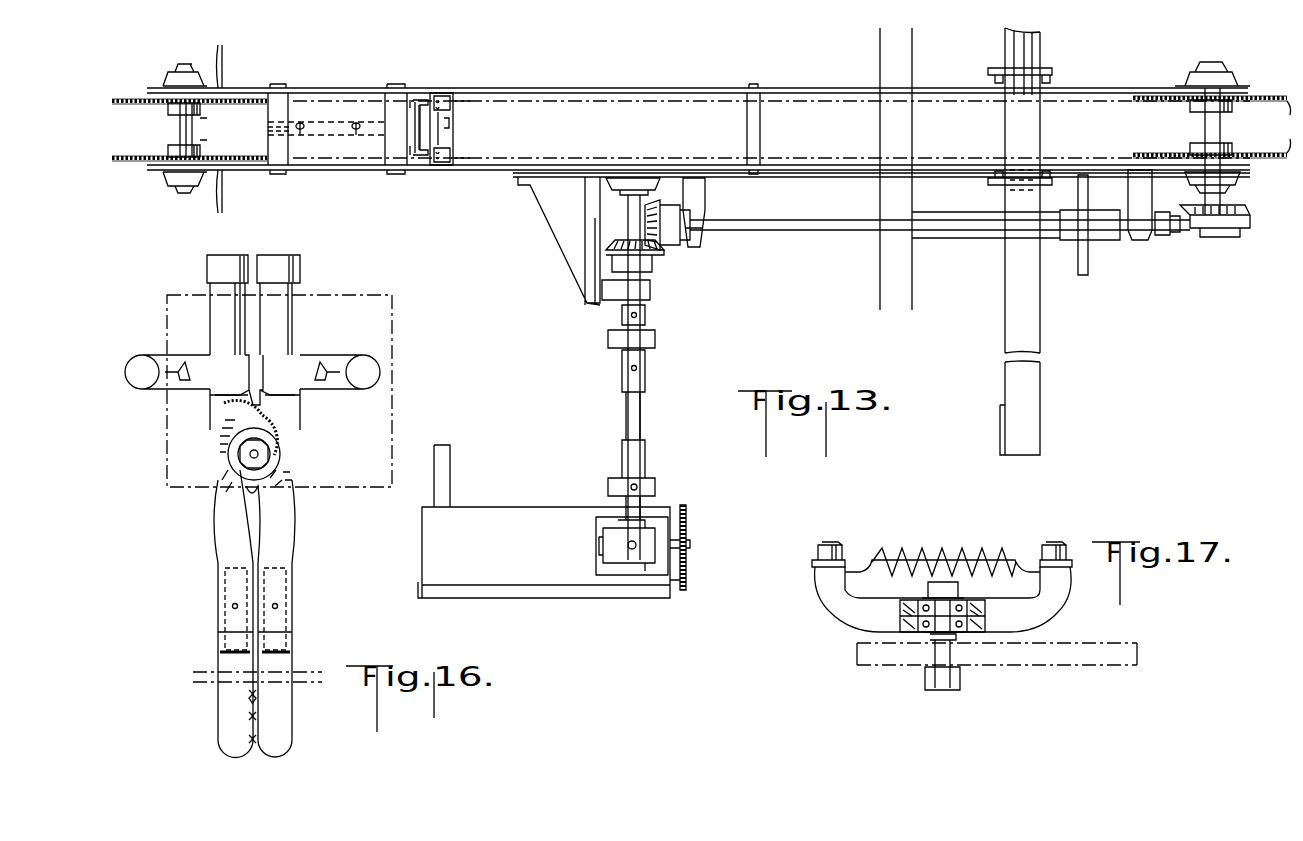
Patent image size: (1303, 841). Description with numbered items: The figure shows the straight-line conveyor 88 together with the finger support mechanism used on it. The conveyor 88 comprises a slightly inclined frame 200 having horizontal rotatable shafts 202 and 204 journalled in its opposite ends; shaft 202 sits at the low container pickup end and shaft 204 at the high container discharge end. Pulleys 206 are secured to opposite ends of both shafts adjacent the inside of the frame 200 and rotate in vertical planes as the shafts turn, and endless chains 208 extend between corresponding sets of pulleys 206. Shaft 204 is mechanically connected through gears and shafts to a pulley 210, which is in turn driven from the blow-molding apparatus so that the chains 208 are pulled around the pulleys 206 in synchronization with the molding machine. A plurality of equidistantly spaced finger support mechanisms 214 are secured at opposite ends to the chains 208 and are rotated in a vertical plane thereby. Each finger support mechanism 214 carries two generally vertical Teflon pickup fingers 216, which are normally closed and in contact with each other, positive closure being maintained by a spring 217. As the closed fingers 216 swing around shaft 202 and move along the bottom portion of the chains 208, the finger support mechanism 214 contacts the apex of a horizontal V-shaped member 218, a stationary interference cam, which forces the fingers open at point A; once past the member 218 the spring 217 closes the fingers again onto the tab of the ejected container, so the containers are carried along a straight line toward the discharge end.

In FIG. 13, the conveyor 88 is at (496, 213).
In FIG. 13, the frame 200 is at (687, 84).
In FIG. 13, the shaft 202 is at (192, 128).
In FIG. 13, the shaft 204 is at (1208, 128).
In FIG. 13, the pulleys 206 is at (173, 146).
In FIG. 13, the endless chains 208 is at (128, 115).
In FIG. 13, the pulley 210 is at (686, 512).
In FIG. 13, the finger support mechanism 214 is at (446, 148).
In FIG. 16, the finger support mechanism 214 is at (342, 310).
In FIG. 17, the finger support mechanism 214 is at (796, 574).
In FIG. 13, the pickup fingers 216 is at (425, 150).
In FIG. 16, the pickup fingers 216 is at (250, 724).
In FIG. 17, the spring 217 is at (925, 550).
In FIG. 13, the horizontal V-shaped member 218 is at (316, 125).